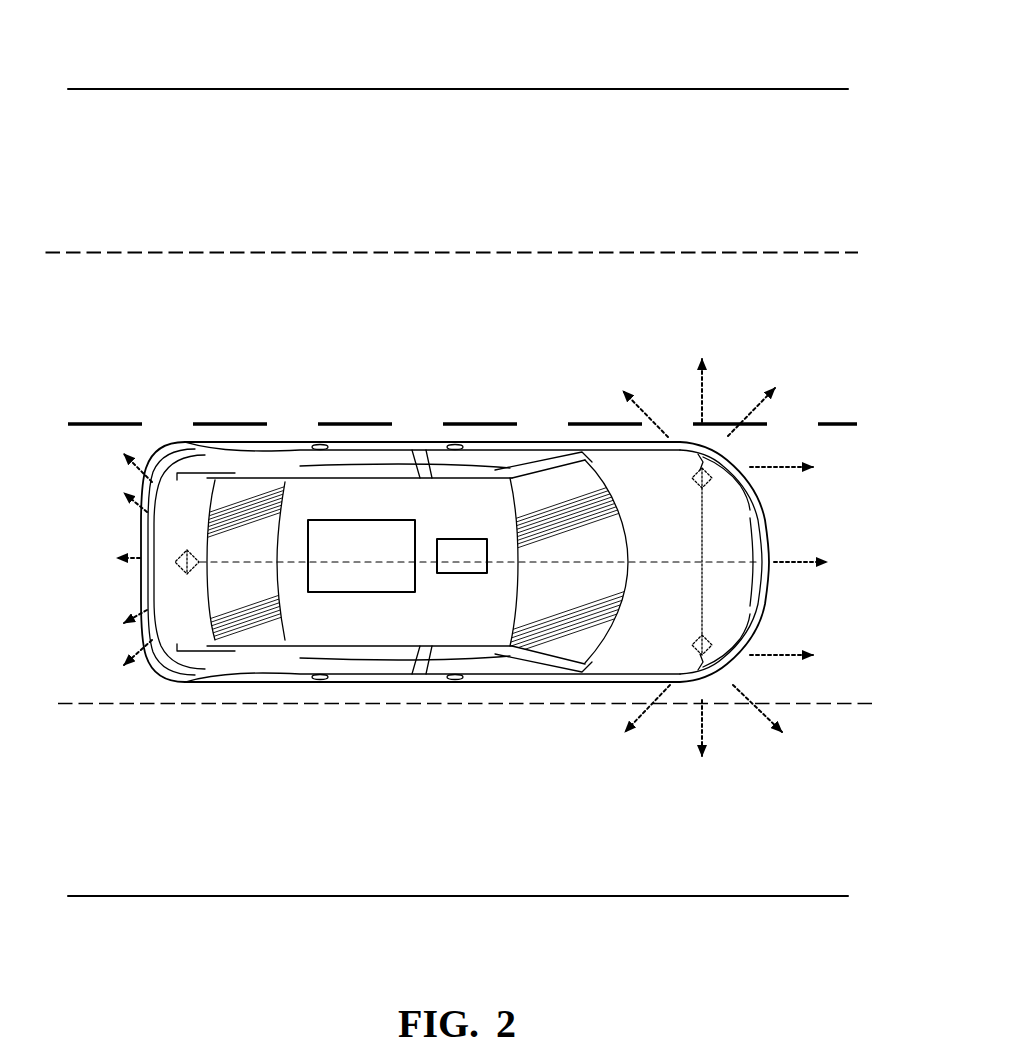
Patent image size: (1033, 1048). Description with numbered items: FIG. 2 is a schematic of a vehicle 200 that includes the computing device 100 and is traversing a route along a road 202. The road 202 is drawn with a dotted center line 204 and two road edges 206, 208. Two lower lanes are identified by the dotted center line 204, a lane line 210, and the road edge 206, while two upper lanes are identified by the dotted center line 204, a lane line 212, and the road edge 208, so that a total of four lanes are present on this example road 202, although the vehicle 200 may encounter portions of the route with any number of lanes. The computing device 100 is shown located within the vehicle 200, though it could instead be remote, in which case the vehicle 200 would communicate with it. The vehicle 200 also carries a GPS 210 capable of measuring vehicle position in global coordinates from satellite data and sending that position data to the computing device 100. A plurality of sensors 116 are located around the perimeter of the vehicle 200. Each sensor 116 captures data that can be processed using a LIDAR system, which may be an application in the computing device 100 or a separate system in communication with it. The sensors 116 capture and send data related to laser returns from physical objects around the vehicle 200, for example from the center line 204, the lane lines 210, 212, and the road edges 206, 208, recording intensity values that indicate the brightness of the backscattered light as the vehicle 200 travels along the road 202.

The computing device 100 is at (372, 592).
The sensors 116 is at (185, 550).
The vehicle 200 is at (413, 441).
The road 202 is at (656, 44).
The dotted center line 204 is at (110, 422).
The road edge 206 is at (105, 896).
The road edge 208 is at (113, 89).
The lane line / GPS 210 is at (455, 539).
The lane line 212 is at (249, 252).